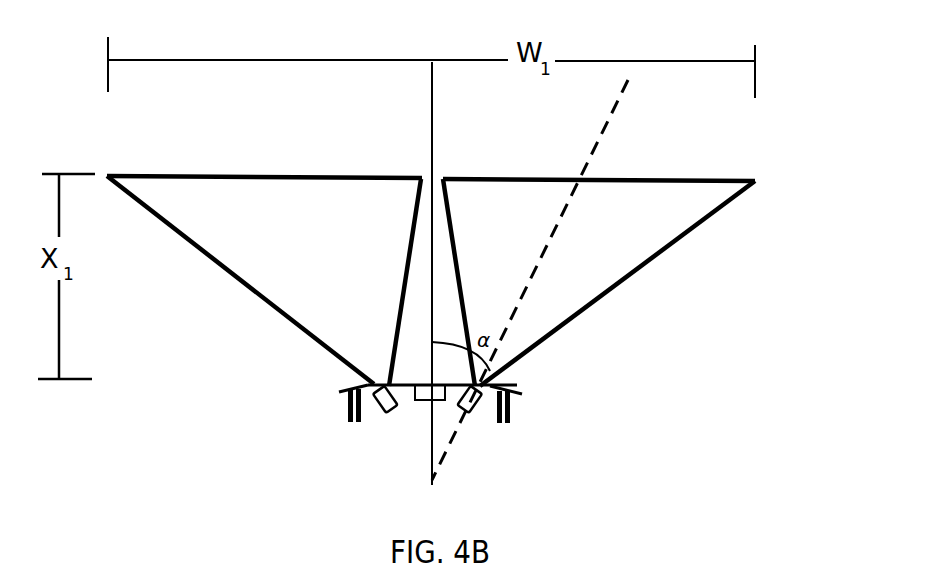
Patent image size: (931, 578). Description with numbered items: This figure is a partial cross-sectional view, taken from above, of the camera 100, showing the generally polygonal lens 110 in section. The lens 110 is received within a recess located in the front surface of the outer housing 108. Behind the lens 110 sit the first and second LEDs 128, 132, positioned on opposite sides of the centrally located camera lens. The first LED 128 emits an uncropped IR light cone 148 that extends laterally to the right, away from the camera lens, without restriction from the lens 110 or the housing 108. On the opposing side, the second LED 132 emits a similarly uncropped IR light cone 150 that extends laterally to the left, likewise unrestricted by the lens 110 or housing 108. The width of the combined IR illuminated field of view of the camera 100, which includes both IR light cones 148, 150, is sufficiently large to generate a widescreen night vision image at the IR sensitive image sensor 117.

The camera 100 is at (568, 430).
The outer housing 108 is at (511, 392).
The generally polygonal lens 110 is at (413, 389).
The IR sensitive image sensor 117 is at (427, 400).
The first LED 128 is at (465, 412).
The second LED 132 is at (391, 414).
The IR light cone 148 is at (646, 266).
The IR light cone 150 is at (223, 265).